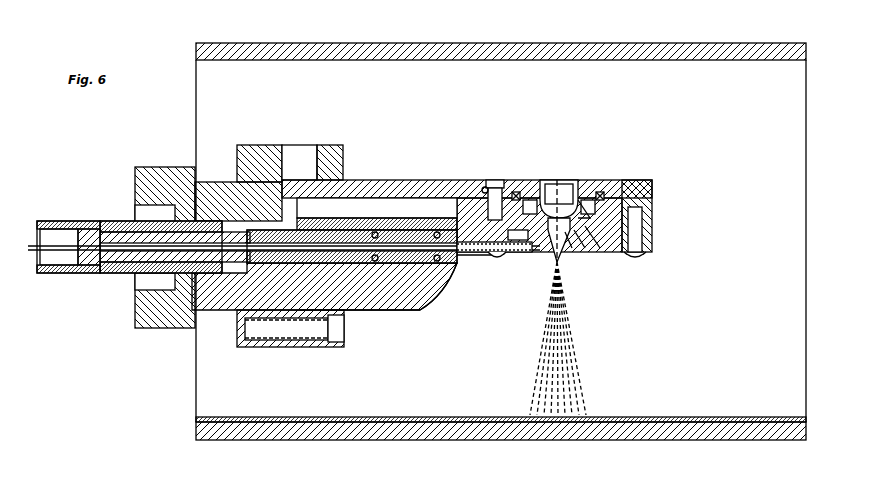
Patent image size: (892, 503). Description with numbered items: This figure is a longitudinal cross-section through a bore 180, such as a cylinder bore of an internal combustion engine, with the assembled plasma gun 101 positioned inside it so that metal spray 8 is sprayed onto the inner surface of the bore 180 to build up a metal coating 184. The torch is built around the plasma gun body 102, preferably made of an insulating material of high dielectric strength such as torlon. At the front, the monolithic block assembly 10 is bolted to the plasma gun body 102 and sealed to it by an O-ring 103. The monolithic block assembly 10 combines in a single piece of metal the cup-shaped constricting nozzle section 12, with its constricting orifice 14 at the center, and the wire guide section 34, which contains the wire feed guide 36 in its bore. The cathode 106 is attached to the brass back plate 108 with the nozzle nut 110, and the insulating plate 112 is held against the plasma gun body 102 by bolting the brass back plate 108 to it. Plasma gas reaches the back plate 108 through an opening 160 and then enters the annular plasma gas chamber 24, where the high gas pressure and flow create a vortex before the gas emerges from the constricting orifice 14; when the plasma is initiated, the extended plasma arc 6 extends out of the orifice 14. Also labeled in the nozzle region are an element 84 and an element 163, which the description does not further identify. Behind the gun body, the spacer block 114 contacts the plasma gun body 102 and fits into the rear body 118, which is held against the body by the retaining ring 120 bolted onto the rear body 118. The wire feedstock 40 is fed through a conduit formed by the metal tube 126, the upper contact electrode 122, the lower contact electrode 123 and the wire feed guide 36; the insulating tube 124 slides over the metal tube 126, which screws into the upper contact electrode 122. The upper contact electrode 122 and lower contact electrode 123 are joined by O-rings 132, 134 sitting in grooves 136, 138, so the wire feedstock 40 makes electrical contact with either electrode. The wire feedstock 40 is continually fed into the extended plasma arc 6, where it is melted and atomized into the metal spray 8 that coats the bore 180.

The bore 180 is at (602, 43).
The metal coating 184 is at (253, 418).
The plasma gun 101 is at (664, 157).
The plasma gun body 102 is at (650, 190).
The O-ring 103 is at (498, 257).
The rear body 118 is at (166, 176).
The spacer block 114 is at (235, 207).
The retaining ring 120 is at (320, 145).
The insulating tube 124 is at (112, 221).
The metal tube 126 is at (91, 273).
The upper contact electrode 122 is at (272, 316).
The lower contact electrode 123 is at (355, 311).
The O-ring 134 is at (383, 311).
The O-ring 132 is at (438, 275).
The groove 138 is at (375, 231).
The brass back plate 108 is at (388, 183).
The insulating plate 112 is at (410, 218).
The groove 136 is at (437, 231).
The washer 163 is at (485, 187).
The opening 160 is at (497, 181).
The seal 84 is at (516, 192).
The annular plasma gas chamber 24 is at (537, 200).
The cathode 106 is at (562, 181).
The nozzle nut 110 is at (583, 196).
The extended plasma arc 6 is at (551, 240).
The constricting orifice 14 is at (566, 242).
The constricting nozzle section 12 is at (578, 242).
The monolithic block assembly 10 is at (590, 246).
The wire guide section 34 is at (463, 252).
The wire feed guide 36 is at (478, 256).
The wire feedstock 40 is at (515, 242).
The metal spray 8 is at (573, 352).